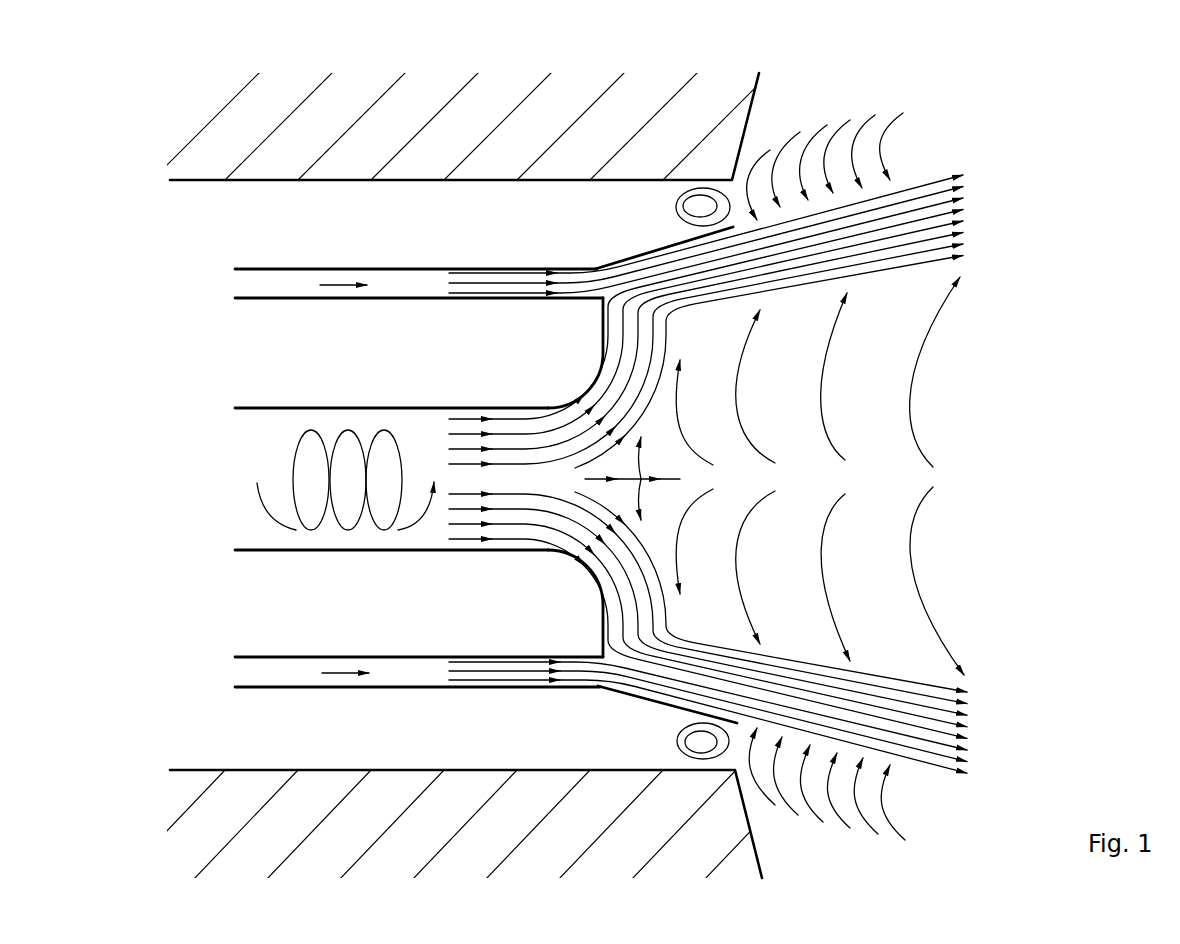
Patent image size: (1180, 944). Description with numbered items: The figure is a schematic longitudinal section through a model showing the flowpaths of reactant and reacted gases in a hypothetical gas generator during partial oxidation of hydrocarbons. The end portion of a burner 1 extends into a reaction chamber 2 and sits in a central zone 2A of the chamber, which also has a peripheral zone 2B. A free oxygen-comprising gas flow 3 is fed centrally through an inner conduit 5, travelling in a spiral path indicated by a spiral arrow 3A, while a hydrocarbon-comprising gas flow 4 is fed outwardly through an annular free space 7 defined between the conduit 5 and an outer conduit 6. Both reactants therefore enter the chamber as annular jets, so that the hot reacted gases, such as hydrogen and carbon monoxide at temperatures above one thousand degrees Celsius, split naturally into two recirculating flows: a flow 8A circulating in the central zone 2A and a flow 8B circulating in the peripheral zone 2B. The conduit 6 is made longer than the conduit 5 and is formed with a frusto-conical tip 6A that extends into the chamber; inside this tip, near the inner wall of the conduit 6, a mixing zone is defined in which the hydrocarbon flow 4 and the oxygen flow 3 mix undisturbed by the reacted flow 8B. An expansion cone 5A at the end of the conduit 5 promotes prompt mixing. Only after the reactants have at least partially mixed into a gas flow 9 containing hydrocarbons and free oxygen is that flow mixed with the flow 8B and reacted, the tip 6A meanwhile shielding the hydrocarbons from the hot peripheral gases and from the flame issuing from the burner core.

The burner 1 is at (146, 338).
The reaction chamber 2 is at (1088, 365).
The central zone 2A is at (977, 492).
The peripheral zone 2B is at (992, 112).
The free oxygen-comprising gas flow 3 is at (466, 408).
The spiral arrow 3A is at (296, 452).
The hydrocarbon-comprising gas flow 4 is at (330, 284).
The conduit 5 is at (382, 367).
The expansion cone 5A is at (598, 326).
The conduit 6 is at (298, 268).
The frusto-conical tip 6A is at (625, 262).
The annular free space 7 is at (284, 287).
The reacted gas flow 8A is at (910, 378).
The reacted gas flow 8B is at (676, 212).
The gas flow containing hydrocarbons and free oxygen 9 is at (990, 195).